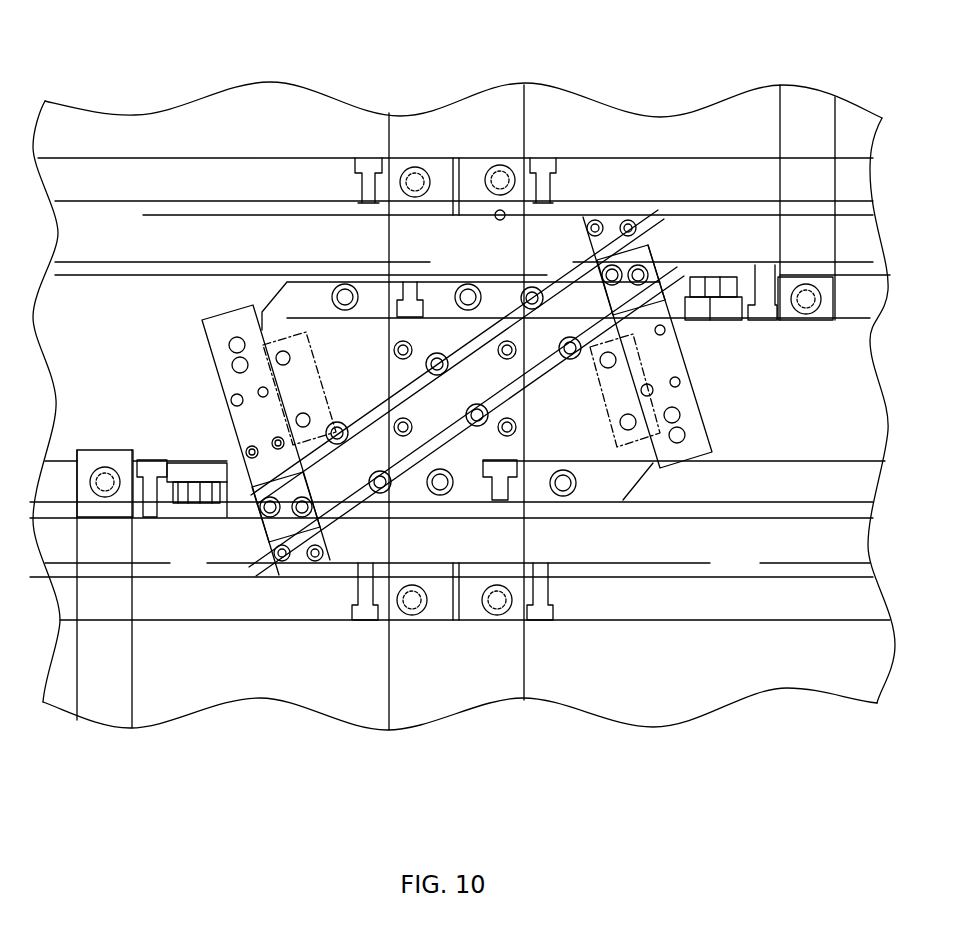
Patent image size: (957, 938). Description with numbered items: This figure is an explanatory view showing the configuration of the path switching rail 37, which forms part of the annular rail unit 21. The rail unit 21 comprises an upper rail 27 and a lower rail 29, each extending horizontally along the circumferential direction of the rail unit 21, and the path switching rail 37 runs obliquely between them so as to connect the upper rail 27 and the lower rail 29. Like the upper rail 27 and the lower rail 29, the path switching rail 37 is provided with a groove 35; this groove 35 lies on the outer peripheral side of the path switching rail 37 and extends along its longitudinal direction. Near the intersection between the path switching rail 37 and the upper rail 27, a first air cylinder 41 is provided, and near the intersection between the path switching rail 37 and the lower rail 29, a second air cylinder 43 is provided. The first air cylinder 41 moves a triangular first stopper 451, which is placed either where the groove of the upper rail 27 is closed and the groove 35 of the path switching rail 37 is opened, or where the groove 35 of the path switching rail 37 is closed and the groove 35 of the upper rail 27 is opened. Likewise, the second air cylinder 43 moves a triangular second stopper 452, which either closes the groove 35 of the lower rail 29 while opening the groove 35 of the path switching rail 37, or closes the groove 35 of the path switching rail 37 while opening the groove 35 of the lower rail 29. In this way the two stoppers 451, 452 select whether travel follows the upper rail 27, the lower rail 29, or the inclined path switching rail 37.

The rail unit 21 is at (668, 158).
The upper rail 27 is at (147, 240).
The lower rail 29 is at (167, 547).
The groove 35 is at (430, 400).
The path switching rail 37 is at (483, 380).
The first air cylinder 41 is at (685, 400).
The second air cylinder 43 is at (250, 425).
The first stopper 451 is at (652, 225).
The second stopper 452 is at (313, 492).